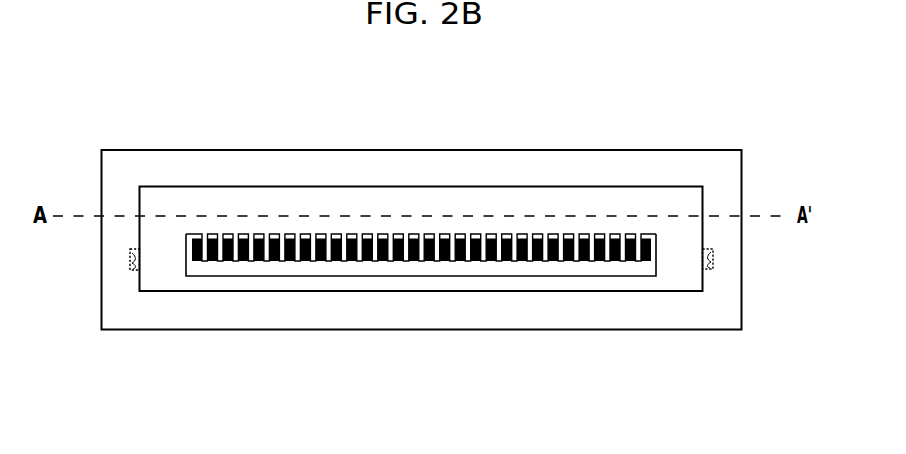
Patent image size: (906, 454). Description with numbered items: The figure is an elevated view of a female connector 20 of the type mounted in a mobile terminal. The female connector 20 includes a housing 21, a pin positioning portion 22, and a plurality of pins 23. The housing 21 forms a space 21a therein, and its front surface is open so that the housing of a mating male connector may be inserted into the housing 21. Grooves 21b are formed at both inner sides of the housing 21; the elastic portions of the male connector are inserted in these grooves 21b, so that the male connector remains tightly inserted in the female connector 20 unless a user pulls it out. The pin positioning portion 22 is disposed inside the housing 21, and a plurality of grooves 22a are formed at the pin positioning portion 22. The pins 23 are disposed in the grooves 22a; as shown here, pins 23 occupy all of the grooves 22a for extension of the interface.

The female connector 20 is at (93, 99).
The housing 21 is at (577, 178).
The space 21a is at (396, 199).
The grooves 21b is at (131, 262).
The pin positioning portion 22 is at (631, 270).
The grooves 22a is at (644, 237).
The pins 23 is at (521, 237).